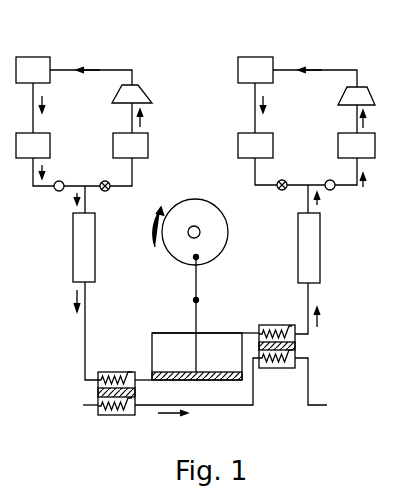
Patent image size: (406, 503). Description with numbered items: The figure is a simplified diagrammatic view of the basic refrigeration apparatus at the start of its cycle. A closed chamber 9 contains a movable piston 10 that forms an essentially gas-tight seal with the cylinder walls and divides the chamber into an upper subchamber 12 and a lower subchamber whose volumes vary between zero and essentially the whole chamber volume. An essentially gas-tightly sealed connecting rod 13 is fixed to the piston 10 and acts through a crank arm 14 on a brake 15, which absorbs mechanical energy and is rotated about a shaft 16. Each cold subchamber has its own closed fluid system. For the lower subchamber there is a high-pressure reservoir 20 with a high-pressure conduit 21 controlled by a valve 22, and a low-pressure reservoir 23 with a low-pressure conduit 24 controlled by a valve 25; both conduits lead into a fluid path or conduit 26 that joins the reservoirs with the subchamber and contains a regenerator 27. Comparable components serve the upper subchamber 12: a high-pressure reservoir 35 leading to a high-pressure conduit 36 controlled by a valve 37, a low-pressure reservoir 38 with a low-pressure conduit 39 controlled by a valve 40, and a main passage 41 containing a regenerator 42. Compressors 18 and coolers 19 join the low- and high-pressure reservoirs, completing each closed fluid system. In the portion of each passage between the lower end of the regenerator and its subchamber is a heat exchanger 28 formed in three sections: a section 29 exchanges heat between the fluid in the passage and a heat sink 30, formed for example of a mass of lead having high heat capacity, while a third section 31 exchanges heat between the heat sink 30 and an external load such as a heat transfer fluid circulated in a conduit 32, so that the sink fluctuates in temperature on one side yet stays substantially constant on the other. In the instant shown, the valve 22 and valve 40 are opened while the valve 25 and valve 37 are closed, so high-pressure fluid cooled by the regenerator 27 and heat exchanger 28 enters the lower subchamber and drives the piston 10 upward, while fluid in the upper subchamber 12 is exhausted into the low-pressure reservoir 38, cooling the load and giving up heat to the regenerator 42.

The closed chamber 9 is at (175, 332).
The piston 10 is at (226, 381).
The upper subchamber 12 is at (156, 343).
The connecting rod 13 is at (198, 321).
The crank arm 14 is at (199, 287).
The brake 15 is at (229, 232).
The shaft 16 is at (199, 237).
The compressor 18 is at (140, 97).
The cooler 19 is at (37, 65).
The high-pressure reservoir 20 is at (46, 144).
The high-pressure conduit 21 is at (33, 172).
The valve 22 is at (57, 192).
The low-pressure reservoir 23 is at (141, 144).
The low-pressure conduit 24 is at (133, 170).
The valve 25 is at (102, 181).
The fluid path or conduit 26 is at (88, 198).
The regenerator 27 is at (88, 262).
The heat exchanger 28 is at (120, 416).
The heat exchanger section 29 is at (110, 373).
The heat sink 30 is at (98, 391).
The third section of heat exchanger 31 is at (130, 410).
The conduit 32 is at (312, 396).
The high-pressure reservoir 35 is at (266, 144).
The high-pressure conduit 36 is at (255, 171).
The valve 37 is at (286, 181).
The low-pressure reservoir 38 is at (365, 144).
The low-pressure conduit 39 is at (358, 170).
The valve 40 is at (333, 190).
The main passage 41 is at (305, 200).
The regenerator 42 is at (313, 266).